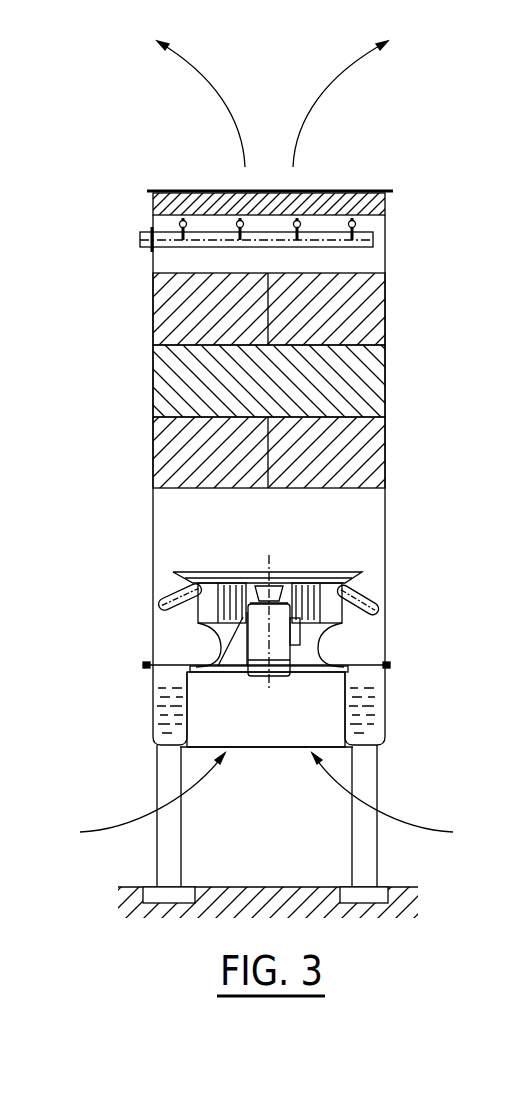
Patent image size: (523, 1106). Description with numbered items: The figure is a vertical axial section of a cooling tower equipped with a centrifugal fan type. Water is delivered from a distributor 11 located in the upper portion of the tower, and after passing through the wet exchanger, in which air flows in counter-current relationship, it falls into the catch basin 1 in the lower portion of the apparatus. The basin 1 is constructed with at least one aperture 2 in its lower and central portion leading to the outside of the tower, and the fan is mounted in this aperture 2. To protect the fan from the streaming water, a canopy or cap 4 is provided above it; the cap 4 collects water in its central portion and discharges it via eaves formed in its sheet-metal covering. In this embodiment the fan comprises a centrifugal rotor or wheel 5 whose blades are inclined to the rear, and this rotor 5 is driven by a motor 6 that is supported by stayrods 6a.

The catch basin 1 is at (163, 712).
The aperture 2 is at (210, 718).
The canopy or cap 4 is at (196, 576).
The centrifugal rotor or wheel 5 is at (206, 609).
The motor 6 is at (283, 649).
The stayrods 6a is at (228, 658).
The distributor 11 is at (143, 240).